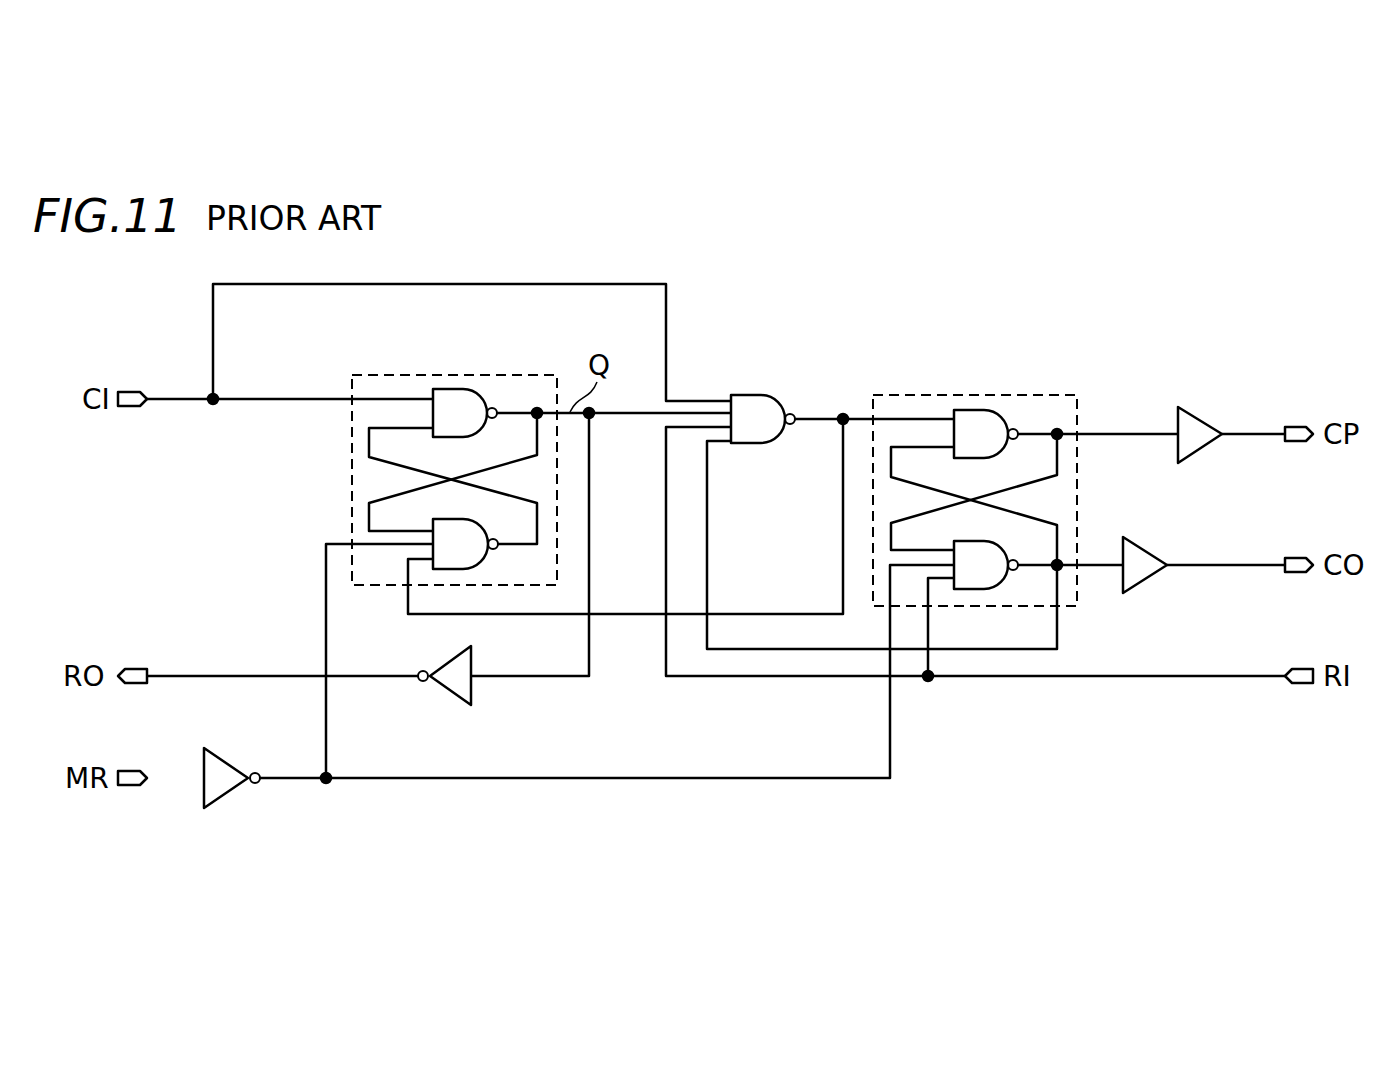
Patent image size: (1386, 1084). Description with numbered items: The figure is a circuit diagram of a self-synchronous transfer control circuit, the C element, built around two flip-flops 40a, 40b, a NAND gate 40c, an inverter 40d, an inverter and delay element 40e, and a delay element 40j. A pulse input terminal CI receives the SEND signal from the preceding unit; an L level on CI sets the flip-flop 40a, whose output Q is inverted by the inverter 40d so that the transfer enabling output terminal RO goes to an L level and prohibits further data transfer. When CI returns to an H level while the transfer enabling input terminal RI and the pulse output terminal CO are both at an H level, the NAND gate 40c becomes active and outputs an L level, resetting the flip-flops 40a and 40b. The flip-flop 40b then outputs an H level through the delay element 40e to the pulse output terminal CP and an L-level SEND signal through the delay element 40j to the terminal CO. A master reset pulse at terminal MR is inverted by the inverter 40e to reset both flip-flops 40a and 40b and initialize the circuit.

The flip-flop 40a is at (492, 374).
The flip-flop 40b is at (1013, 395).
The NAND gate 40c is at (748, 395).
The inverter 40d is at (440, 690).
The inverter 40e is at (1198, 413).
The delay element 40j is at (1143, 546).